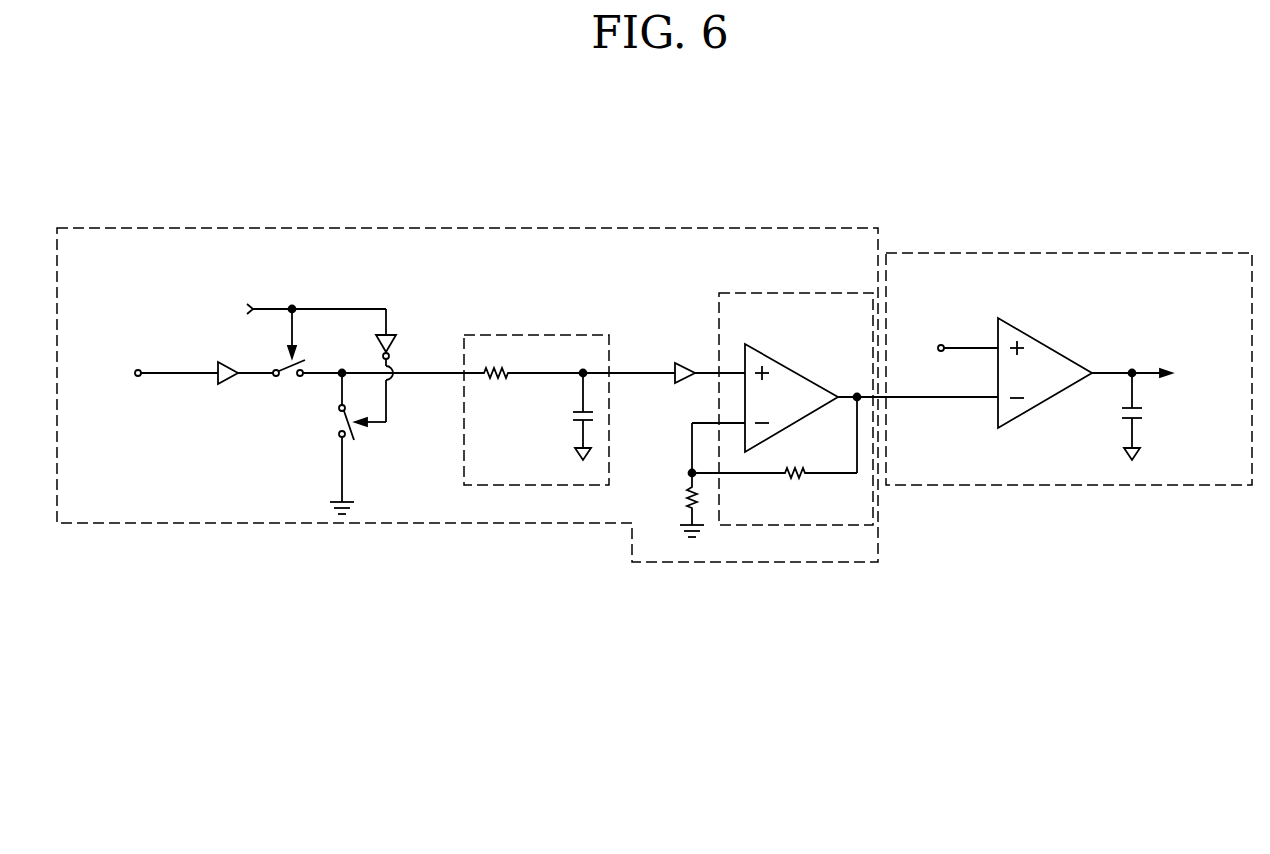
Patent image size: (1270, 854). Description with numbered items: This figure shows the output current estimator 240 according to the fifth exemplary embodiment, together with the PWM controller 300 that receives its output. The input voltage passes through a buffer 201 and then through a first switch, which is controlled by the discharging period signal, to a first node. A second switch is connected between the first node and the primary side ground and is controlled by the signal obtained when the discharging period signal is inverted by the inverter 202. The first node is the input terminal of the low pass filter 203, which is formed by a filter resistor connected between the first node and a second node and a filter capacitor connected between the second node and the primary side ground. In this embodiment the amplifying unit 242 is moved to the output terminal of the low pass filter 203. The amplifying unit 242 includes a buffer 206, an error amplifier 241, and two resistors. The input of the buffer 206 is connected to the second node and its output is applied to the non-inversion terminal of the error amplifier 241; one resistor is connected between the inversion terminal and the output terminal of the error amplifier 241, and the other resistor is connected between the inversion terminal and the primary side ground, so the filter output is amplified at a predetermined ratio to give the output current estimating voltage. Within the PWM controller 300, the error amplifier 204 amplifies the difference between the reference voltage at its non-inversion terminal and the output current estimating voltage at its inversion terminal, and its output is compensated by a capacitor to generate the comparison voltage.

The output current estimator 240 is at (351, 228).
The buffer 201 is at (218, 366).
The inverter 202 is at (397, 351).
The low pass filter 203 is at (547, 334).
The buffer 206 is at (675, 368).
The amplifying unit 242 is at (780, 292).
The error amplifier 241 is at (794, 364).
The PWM controller 300 is at (1063, 252).
The error amplifier 204 is at (1049, 342).